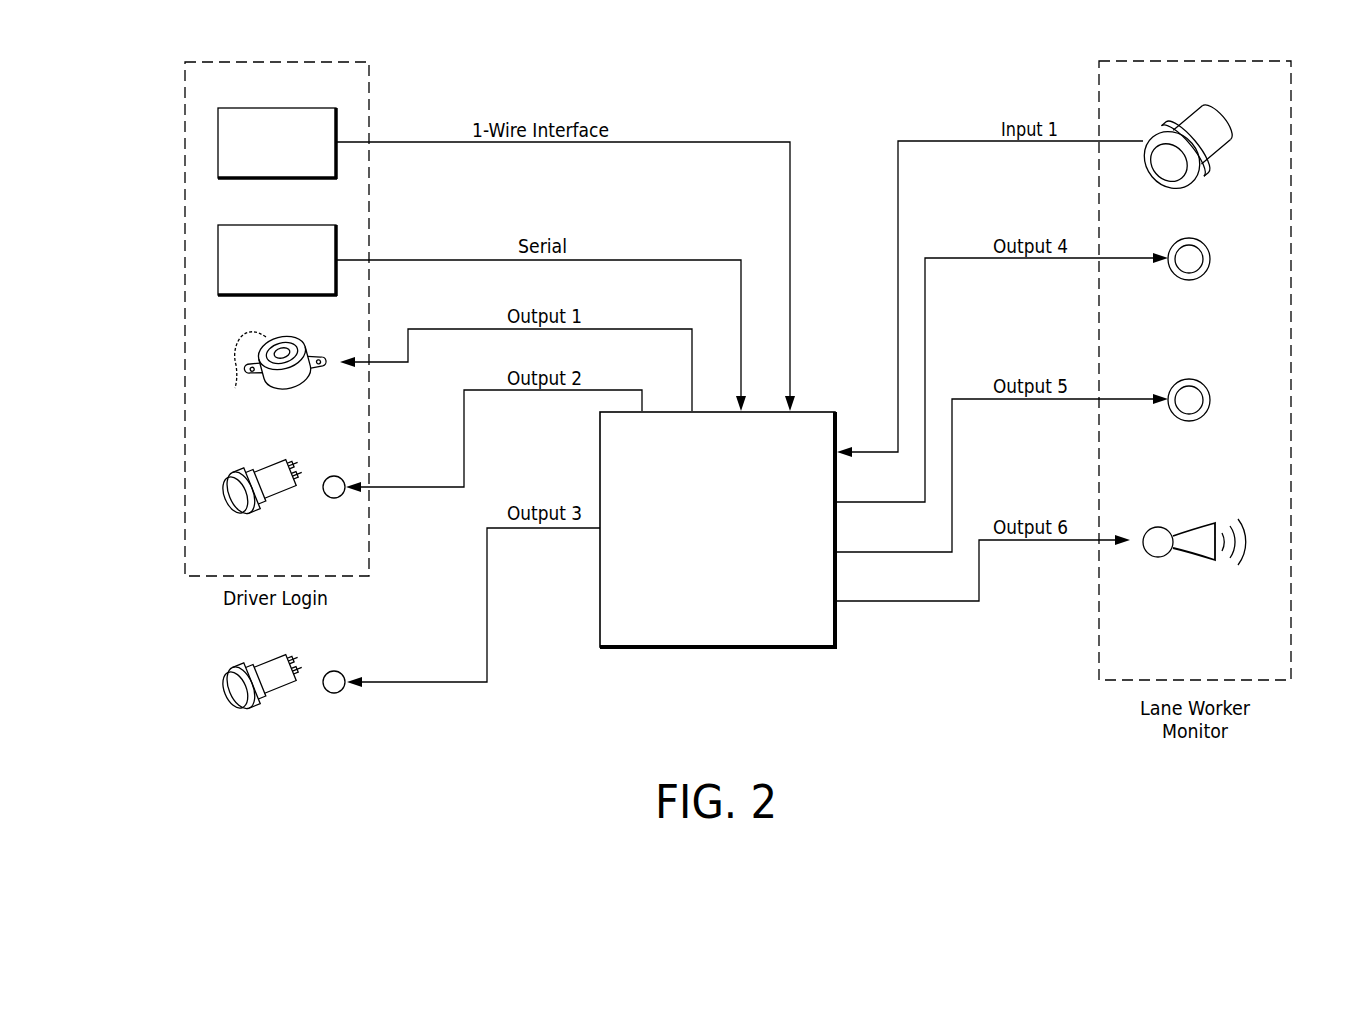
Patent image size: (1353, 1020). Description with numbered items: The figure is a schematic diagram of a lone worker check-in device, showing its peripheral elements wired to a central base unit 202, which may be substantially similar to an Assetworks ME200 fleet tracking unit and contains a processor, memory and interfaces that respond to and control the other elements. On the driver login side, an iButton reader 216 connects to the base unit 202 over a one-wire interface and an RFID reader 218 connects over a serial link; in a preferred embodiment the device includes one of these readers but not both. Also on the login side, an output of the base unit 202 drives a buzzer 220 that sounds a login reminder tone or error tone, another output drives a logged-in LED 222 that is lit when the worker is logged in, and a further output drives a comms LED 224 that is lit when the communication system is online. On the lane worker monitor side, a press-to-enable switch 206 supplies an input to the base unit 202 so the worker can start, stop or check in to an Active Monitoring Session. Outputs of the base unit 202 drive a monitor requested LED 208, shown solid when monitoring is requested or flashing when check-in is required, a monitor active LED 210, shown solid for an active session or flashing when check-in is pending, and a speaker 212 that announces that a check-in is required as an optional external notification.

The base unit 202 is at (718, 648).
The switch 206 is at (1215, 97).
The monitor requested LED 208 is at (1211, 259).
The monitor active LED 210 is at (1211, 400).
The speaker 212 is at (1250, 541).
The iButton reader 216 is at (297, 108).
The RFID reader 218 is at (297, 225).
The buzzer 220 is at (296, 343).
The logged-in LED 222 is at (293, 466).
The comms LED 224 is at (293, 660).